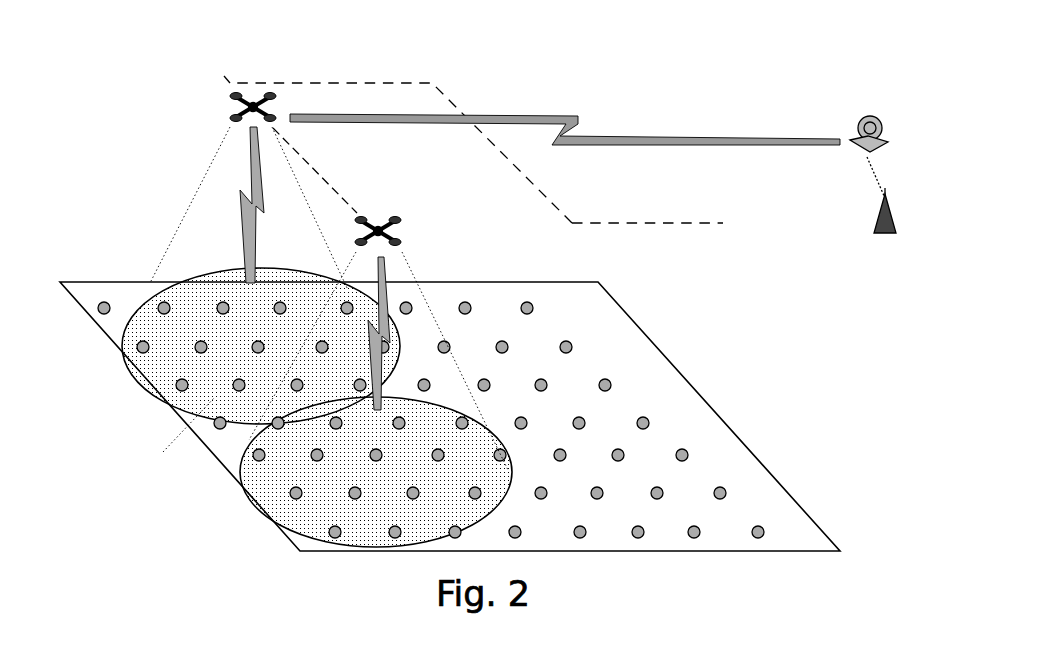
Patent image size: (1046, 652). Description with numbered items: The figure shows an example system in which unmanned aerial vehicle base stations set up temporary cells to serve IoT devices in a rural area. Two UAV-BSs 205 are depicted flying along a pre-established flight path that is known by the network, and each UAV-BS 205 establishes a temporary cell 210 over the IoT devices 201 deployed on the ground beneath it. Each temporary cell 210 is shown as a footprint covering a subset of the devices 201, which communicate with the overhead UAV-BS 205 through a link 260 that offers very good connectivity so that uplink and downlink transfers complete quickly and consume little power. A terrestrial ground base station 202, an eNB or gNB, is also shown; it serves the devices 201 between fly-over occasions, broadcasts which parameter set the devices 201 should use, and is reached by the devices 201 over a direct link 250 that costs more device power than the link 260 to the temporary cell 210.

The IoT devices 201 is at (673, 365).
The ground base station 202 is at (890, 197).
The UAV-BS 205 is at (213, 80).
The temporary cell 210 is at (128, 367).
The direct link 250 is at (557, 113).
The link 260 is at (262, 217).